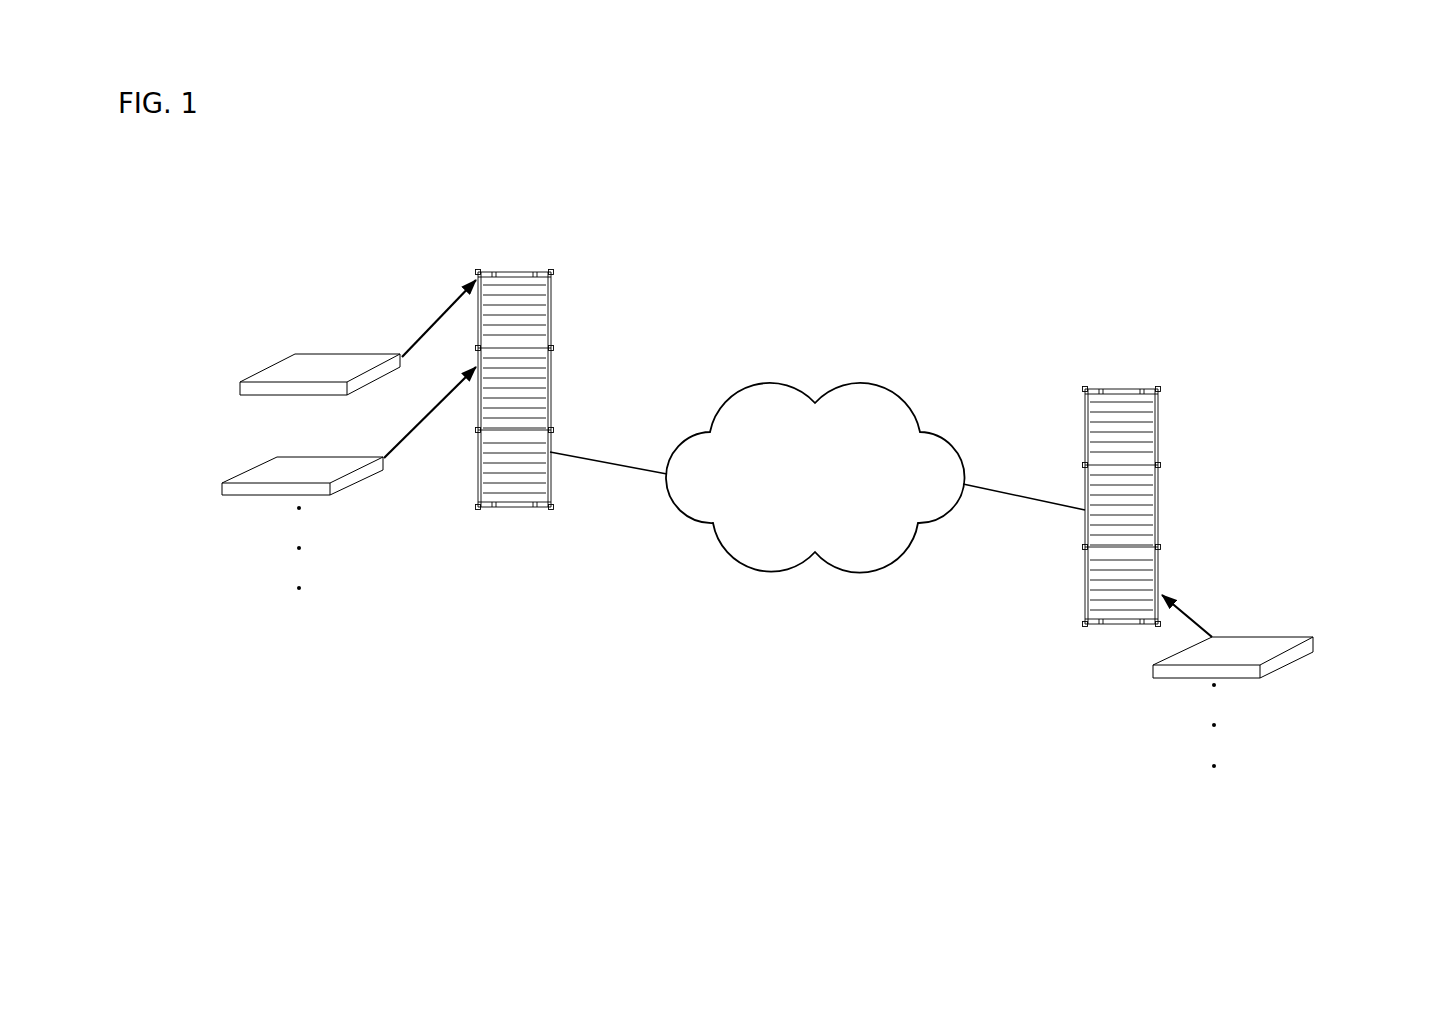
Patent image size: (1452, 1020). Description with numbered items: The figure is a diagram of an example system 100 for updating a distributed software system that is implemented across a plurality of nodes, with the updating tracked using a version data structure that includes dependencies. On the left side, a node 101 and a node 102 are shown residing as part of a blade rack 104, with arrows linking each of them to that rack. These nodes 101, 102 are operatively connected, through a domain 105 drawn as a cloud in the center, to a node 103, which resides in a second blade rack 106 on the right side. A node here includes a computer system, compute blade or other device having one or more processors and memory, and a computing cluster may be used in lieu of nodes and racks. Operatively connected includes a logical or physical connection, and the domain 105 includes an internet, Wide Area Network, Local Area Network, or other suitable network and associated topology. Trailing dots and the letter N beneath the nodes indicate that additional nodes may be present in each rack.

The system 100 is at (1419, 152).
The node 101 is at (327, 355).
The node 102 is at (268, 428).
The node 103 is at (1312, 652).
The blade rack 104 is at (515, 272).
The domain 105 is at (768, 383).
The blade rack 106 is at (1120, 389).